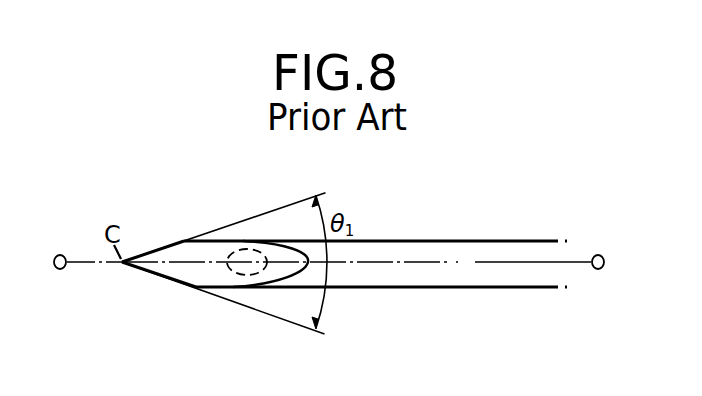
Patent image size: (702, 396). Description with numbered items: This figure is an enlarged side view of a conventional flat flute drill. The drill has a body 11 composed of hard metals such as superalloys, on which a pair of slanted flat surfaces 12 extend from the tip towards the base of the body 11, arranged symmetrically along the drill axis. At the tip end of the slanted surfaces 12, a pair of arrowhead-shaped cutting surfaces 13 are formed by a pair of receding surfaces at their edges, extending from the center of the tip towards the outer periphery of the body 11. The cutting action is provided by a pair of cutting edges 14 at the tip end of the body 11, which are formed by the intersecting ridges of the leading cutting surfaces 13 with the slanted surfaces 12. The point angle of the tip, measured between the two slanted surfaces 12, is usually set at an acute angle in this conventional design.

The body 11 is at (454, 248).
The slanted flat surface 12 is at (222, 274).
The cutting surface 13 is at (163, 242).
The cutting edge 14 is at (182, 242).